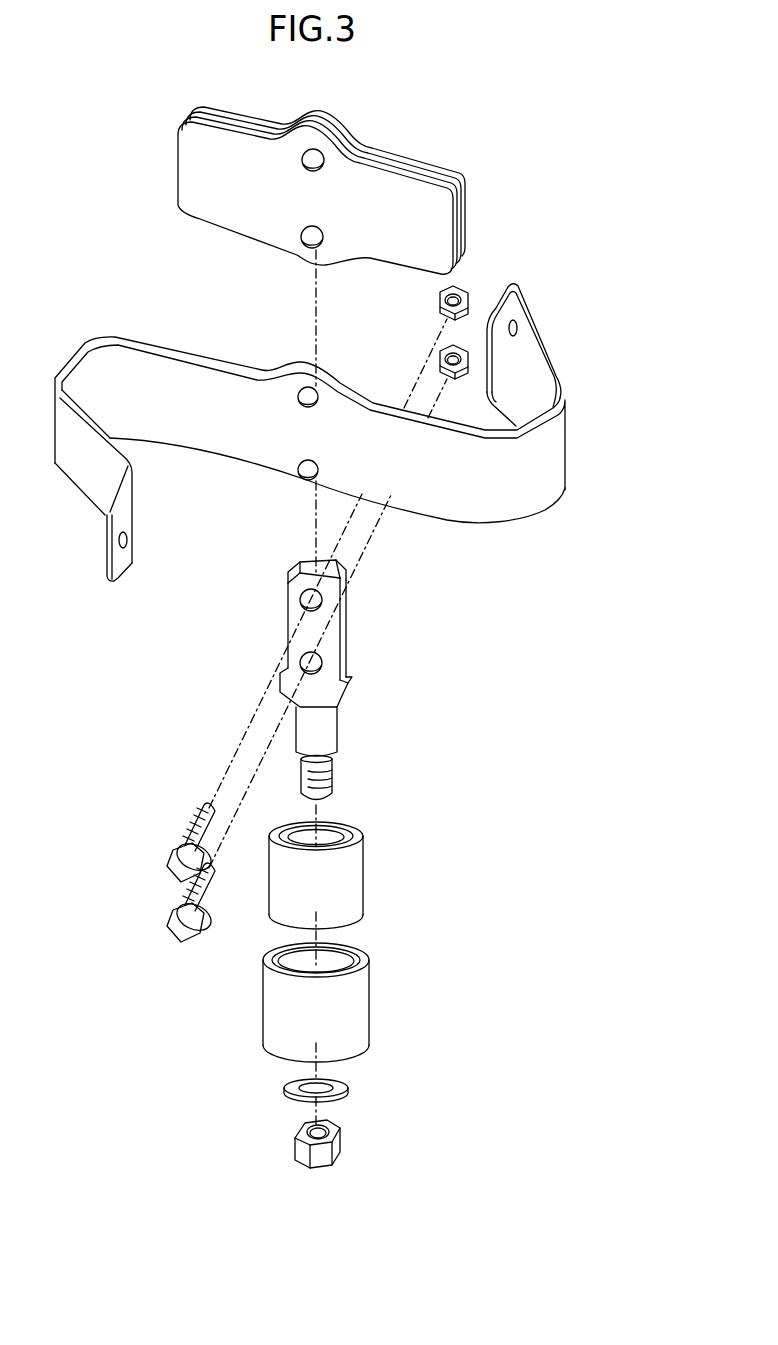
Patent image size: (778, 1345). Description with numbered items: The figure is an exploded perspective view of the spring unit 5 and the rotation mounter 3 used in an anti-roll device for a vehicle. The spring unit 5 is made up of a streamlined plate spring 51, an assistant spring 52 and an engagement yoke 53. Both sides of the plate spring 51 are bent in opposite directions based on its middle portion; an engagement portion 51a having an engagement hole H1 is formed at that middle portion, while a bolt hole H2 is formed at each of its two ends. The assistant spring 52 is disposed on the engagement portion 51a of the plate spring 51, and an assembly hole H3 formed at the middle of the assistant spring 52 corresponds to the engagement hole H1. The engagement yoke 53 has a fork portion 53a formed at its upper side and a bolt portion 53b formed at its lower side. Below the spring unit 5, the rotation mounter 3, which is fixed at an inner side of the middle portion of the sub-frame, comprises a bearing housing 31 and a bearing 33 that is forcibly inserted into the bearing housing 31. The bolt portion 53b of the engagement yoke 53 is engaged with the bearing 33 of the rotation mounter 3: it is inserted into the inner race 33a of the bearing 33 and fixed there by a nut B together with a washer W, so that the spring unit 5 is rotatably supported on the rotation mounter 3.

The spring unit 5 is at (544, 302).
The assistant spring 52 is at (400, 192).
The assembly hole H3 is at (307, 164).
The plate spring 51 is at (528, 494).
The engagement portion 51a is at (360, 450).
The engagement hole H1 is at (304, 400).
The bolt hole H2 is at (521, 328).
The engagement yoke 53 is at (348, 708).
The fork portion 53a is at (330, 612).
The bolt portion 53b is at (334, 775).
The rotation mounter 3 is at (430, 860).
The bearing 33 is at (356, 873).
The inner race 33a is at (307, 838).
The bearing housing 31 is at (356, 1008).
The washer W is at (348, 1087).
The nut B is at (341, 1140).